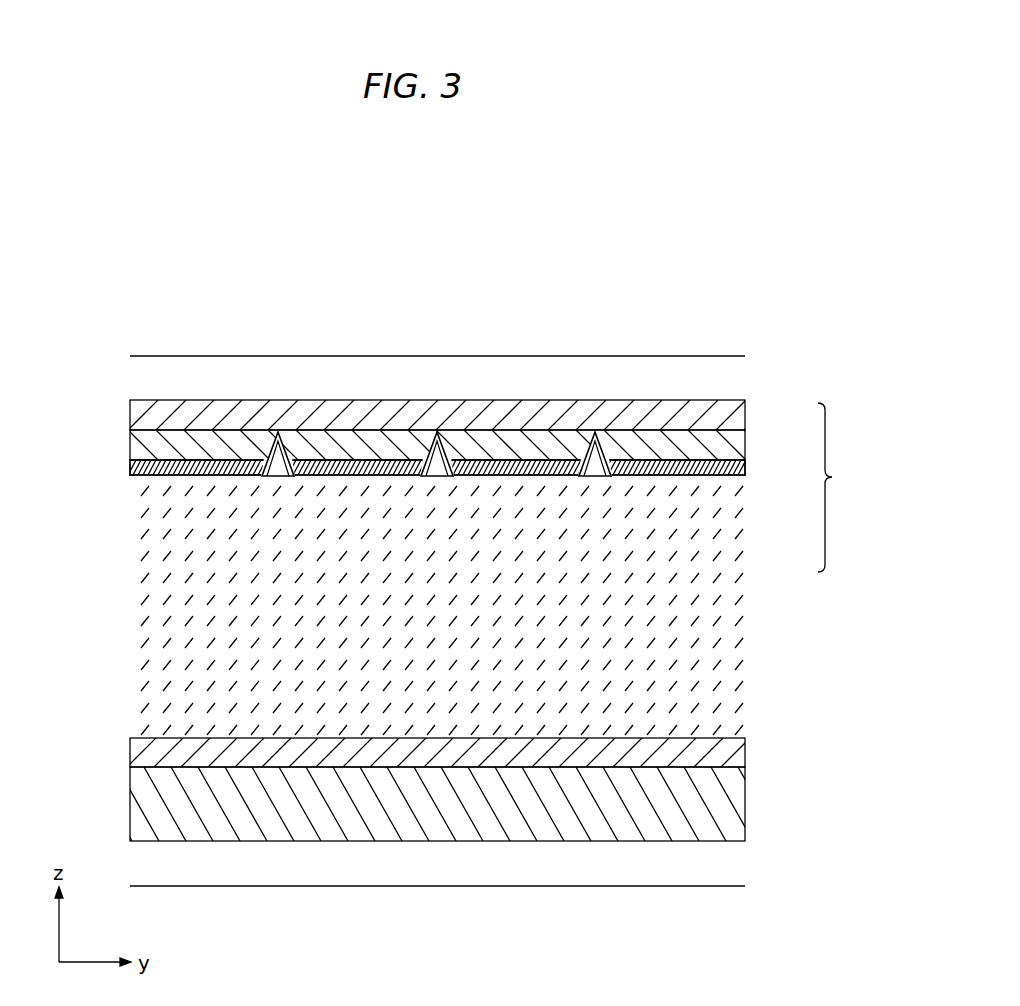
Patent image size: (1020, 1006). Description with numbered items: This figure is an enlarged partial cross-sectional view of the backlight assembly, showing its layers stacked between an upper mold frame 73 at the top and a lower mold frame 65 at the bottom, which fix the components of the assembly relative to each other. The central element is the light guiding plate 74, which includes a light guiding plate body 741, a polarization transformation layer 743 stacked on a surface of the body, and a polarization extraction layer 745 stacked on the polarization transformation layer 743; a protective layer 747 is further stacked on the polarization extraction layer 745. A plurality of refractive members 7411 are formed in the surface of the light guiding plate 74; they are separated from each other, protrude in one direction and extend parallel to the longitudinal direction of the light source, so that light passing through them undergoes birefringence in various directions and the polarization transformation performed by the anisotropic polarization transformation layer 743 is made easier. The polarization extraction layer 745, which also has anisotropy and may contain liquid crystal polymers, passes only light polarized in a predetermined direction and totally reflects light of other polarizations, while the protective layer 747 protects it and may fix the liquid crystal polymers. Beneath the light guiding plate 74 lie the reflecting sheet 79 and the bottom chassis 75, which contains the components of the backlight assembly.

The upper mold frame 73 is at (728, 373).
The light guiding plate 74 is at (840, 487).
The light guiding plate body 741 is at (724, 572).
The refractive members 7411 is at (292, 458).
The polarization transformation layer 743 is at (730, 468).
The polarization extraction layer 745 is at (730, 441).
The protective layer 747 is at (732, 410).
The reflecting sheet 79 is at (730, 750).
The bottom chassis 75 is at (730, 800).
The lower mold frame 65 is at (730, 860).